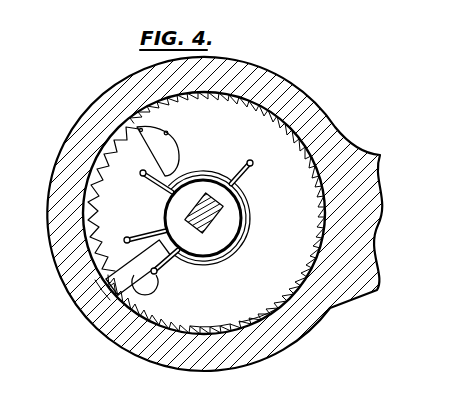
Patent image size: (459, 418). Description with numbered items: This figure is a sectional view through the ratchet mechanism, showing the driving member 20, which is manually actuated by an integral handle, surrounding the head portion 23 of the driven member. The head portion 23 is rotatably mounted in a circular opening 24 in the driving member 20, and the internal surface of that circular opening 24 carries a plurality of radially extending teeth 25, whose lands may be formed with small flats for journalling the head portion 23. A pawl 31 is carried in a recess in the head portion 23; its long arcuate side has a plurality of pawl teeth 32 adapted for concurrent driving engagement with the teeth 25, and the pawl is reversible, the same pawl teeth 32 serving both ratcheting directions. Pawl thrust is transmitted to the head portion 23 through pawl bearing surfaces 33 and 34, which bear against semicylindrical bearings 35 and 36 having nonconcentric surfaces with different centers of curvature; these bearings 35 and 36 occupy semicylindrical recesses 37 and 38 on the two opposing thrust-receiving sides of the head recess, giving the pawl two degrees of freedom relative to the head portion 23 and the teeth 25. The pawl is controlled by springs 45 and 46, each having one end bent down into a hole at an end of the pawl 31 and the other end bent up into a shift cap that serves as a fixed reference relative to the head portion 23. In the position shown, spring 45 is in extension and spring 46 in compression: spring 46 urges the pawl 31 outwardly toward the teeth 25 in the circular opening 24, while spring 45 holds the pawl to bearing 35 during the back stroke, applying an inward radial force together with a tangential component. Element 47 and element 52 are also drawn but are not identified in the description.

The driving member 20 is at (262, 73).
The head portion 23 is at (277, 150).
The circular opening 24 is at (213, 325).
The teeth 25 is at (260, 322).
The pawl 31 is at (137, 213).
The pawl teeth 32 is at (103, 172).
The pawl bearing surface 33 is at (133, 143).
The pawl bearing surface 34 is at (92, 293).
The bearing 35 is at (147, 133).
The bearing 36 is at (123, 294).
The semicylindrical recess 37 is at (164, 134).
The semicylindrical recess 38 is at (146, 291).
The spring 45 is at (240, 170).
The spring 46 is at (170, 265).
The spring coil 47 is at (195, 190).
The shaft 52 is at (207, 223).